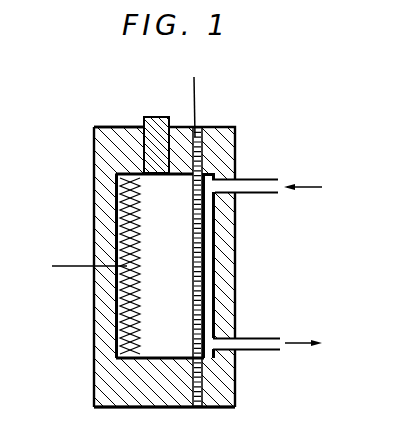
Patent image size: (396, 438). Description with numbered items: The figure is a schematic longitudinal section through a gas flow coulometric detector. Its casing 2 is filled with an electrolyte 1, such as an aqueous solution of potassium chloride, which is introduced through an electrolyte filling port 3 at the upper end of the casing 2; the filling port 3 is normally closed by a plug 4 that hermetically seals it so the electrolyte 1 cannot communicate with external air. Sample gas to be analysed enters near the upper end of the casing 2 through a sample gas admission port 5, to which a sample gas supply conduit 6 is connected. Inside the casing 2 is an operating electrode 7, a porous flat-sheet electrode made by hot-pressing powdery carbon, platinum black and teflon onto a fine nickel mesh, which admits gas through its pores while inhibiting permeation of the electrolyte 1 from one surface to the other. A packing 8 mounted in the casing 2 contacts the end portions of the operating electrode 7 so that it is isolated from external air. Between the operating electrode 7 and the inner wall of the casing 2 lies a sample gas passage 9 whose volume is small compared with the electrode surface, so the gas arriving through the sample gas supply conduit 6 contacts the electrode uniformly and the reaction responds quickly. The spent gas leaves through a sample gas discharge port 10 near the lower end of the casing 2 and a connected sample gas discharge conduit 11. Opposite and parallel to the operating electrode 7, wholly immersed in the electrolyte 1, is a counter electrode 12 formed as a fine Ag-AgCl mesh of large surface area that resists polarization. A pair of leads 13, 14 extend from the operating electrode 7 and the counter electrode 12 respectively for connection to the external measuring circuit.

The electrolyte 1 is at (162, 190).
The casing 2 is at (235, 142).
The electrolyte filling port 3 is at (110, 128).
The plug 4 is at (145, 157).
The sample gas admission port 5 is at (235, 191).
The sample gas supply conduit 6 is at (215, 187).
The operating electrode 7 is at (198, 170).
The packing 8 is at (190, 128).
The sample gas passage 9 is at (208, 250).
The sample gas discharge port 10 is at (234, 351).
The sample gas discharge conduit 11 is at (265, 340).
The counter electrode 12 is at (127, 207).
The lead 13 is at (195, 97).
The lead 14 is at (72, 266).